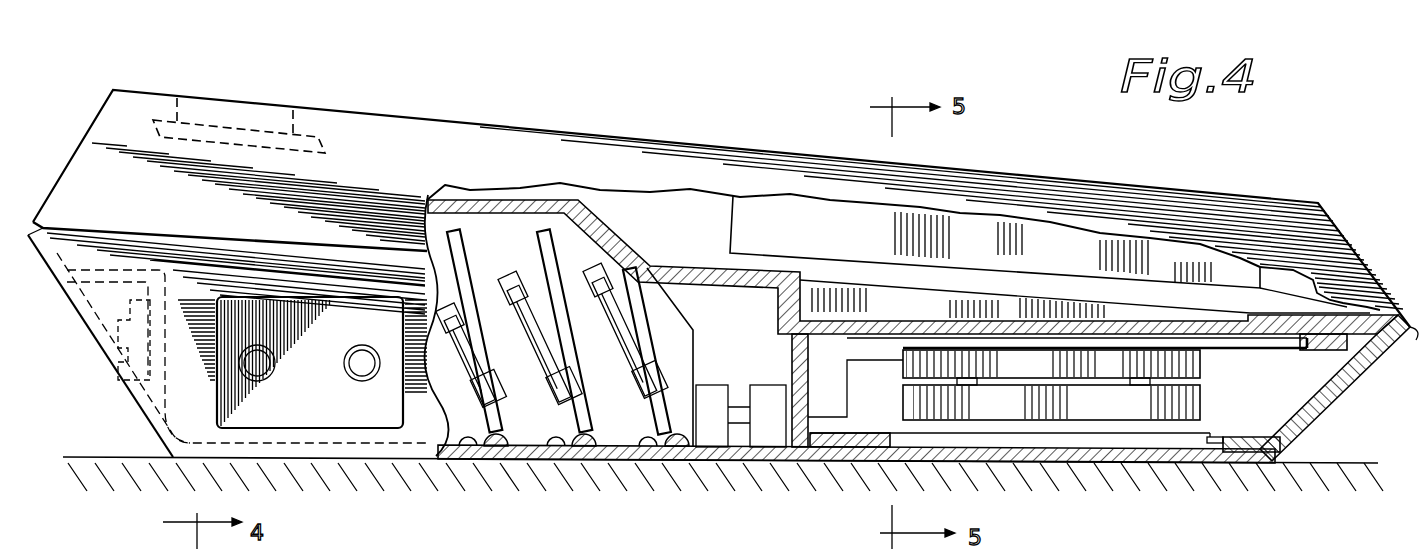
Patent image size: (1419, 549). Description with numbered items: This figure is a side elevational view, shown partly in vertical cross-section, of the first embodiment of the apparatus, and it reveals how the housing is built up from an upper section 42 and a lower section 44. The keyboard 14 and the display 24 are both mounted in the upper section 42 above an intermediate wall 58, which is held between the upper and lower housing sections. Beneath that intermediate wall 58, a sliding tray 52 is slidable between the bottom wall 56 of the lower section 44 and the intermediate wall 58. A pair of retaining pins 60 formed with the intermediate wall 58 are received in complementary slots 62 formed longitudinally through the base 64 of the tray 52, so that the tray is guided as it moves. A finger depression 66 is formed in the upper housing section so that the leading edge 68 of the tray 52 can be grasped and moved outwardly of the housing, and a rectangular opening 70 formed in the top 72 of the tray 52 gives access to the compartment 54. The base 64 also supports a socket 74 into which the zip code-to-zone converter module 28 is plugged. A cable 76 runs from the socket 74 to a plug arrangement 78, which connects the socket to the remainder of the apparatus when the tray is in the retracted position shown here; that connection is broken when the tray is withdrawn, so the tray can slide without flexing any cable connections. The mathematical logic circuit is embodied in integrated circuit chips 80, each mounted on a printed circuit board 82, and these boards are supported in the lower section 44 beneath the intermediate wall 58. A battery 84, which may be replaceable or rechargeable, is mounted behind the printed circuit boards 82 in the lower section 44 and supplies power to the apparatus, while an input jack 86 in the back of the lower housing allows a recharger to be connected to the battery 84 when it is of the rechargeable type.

The keyboard 14 is at (880, 236).
The display 24 is at (268, 117).
The zip code-to-zone converter module 28 is at (1143, 412).
The upper section 42 is at (648, 150).
The lower section 44 is at (1187, 467).
The sliding tray 52 is at (1327, 427).
The compartment 54 is at (898, 411).
The bottom wall 56 is at (1077, 463).
The intermediate wall 58 is at (615, 237).
The retaining pins 60 is at (1327, 353).
The slots 62 is at (972, 344).
The base 64 is at (1227, 340).
The finger depression 66 is at (1370, 290).
The leading edge 68 is at (1413, 343).
The rectangular opening 70 is at (1207, 437).
The top 72 is at (837, 431).
The socket 74 is at (993, 372).
The cable 76 is at (870, 363).
The plug arrangement 78 is at (744, 372).
The integrated circuit chips 80 is at (547, 317).
The printed circuit boards 82 is at (573, 457).
The battery 84 is at (262, 430).
The input jack 86 is at (123, 320).